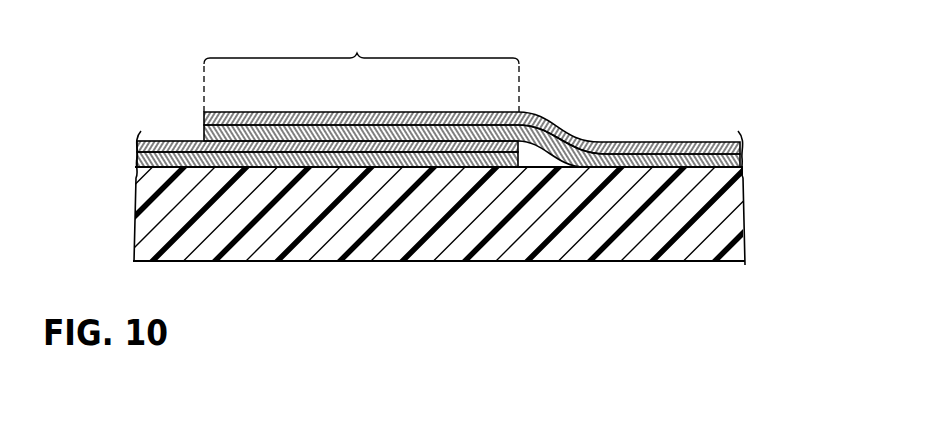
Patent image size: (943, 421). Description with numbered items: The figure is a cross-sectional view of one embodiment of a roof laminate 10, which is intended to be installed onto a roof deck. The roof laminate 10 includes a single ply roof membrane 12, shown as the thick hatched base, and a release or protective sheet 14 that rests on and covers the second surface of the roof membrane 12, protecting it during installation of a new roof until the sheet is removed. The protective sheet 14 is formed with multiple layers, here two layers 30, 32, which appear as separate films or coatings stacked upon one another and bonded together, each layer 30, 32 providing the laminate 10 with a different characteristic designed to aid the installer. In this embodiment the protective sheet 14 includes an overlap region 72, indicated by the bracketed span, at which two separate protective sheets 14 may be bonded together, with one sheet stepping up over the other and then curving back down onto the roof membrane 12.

The roof laminate 10 is at (439, 143).
The roof membrane 12 is at (746, 192).
The protective sheet 14 is at (438, 116).
The layer 30 is at (575, 122).
The layer 32 is at (623, 160).
The overlap region 72 is at (361, 69).